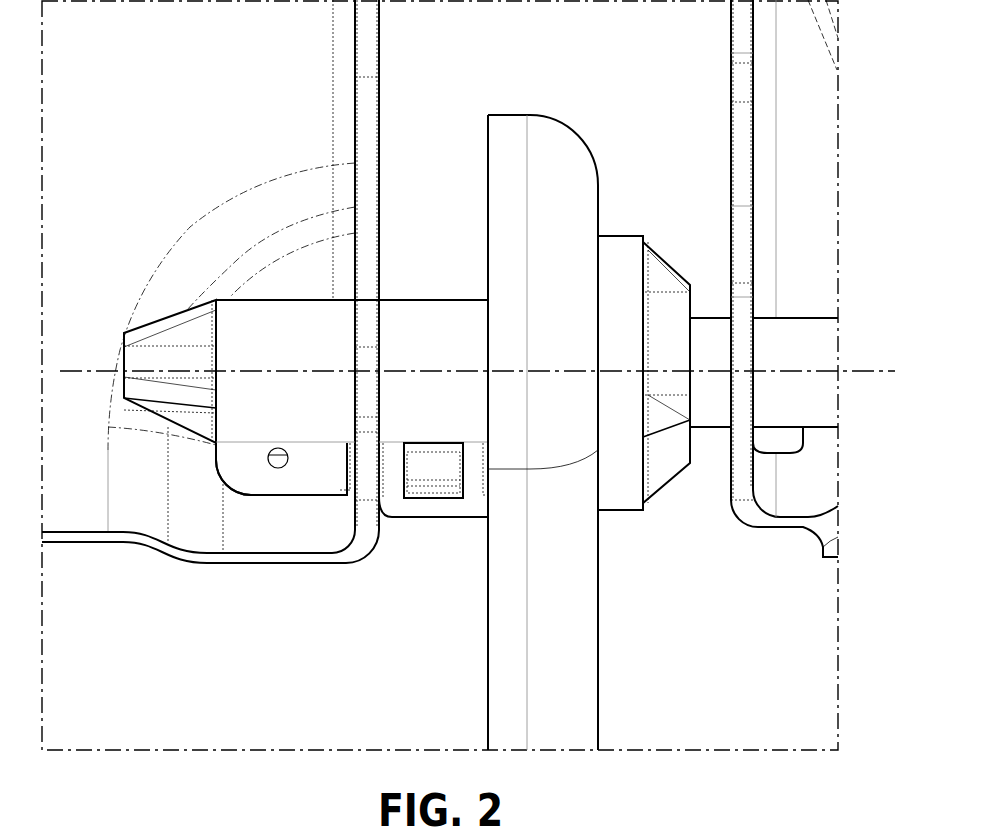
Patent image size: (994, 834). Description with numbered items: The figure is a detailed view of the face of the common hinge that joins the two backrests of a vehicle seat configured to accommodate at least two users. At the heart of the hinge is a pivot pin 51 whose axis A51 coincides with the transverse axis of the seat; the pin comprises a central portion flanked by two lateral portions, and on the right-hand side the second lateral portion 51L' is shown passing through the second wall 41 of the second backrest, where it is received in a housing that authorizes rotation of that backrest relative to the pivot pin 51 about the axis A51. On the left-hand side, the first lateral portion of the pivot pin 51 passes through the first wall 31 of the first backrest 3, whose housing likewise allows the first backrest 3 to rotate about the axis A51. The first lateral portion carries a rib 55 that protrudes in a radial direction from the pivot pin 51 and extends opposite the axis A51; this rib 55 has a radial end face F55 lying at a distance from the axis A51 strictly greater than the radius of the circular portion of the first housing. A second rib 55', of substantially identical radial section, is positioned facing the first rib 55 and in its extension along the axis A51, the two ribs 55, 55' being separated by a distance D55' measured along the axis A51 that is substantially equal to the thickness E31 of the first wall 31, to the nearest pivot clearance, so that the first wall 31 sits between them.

The first backrest 3 is at (203, 112).
The first wall 31 is at (352, 123).
The thickness of the first wall E31 is at (412, 77).
The pivot pin 51 is at (411, 277).
The second wall 41 is at (728, 63).
The second lateral portion 51L' is at (764, 345).
The axis of the pivot pin A51 is at (877, 368).
The distance between the first rib and the second rib D55' is at (326, 348).
The rib 55 is at (306, 473).
The radial end face F55 is at (327, 524).
The second rib 55' is at (443, 522).